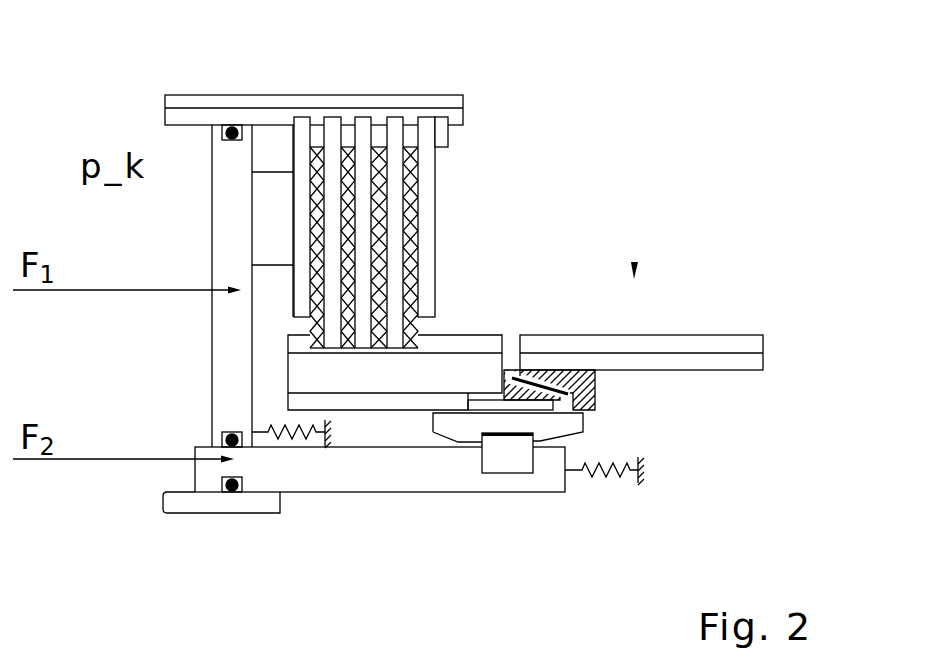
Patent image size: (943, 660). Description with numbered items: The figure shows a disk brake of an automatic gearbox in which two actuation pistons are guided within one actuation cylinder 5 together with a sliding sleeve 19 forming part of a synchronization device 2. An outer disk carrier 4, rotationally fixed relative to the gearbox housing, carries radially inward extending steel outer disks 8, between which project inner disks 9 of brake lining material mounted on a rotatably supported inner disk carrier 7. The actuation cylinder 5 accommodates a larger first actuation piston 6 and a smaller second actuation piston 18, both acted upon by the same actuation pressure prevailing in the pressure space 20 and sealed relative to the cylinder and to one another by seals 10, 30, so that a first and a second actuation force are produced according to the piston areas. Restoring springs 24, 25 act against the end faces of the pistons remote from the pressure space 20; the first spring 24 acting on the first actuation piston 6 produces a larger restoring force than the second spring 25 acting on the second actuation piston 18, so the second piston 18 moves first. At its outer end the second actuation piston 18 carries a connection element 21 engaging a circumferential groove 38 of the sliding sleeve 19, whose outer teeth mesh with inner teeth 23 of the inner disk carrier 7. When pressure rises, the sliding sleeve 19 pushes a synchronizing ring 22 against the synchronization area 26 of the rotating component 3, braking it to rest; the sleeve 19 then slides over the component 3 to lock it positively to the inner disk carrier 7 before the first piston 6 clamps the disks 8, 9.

The synchronization device 2 is at (635, 264).
The rotating component 3 is at (760, 360).
The outer disk carrier 4 is at (323, 97).
The actuation cylinder 5 is at (180, 503).
The first actuation piston 6 is at (227, 247).
The inner disk carrier 7 is at (475, 365).
The outer disks 8 is at (427, 197).
The inner disks 9 is at (412, 157).
The seal 10 is at (237, 127).
The second actuation piston 18 is at (390, 475).
The sliding sleeve 19 is at (462, 432).
The pressure space 20 is at (172, 357).
The connection element 21 is at (595, 392).
The synchronizing ring 22 is at (503, 370).
The inner teeth 23 is at (333, 403).
The first restoring spring 24 is at (270, 428).
The second restoring spring 25 is at (603, 477).
The synchronization area 26 is at (513, 462).
The seal 30 is at (235, 492).
The circumferential groove 38 is at (583, 437).